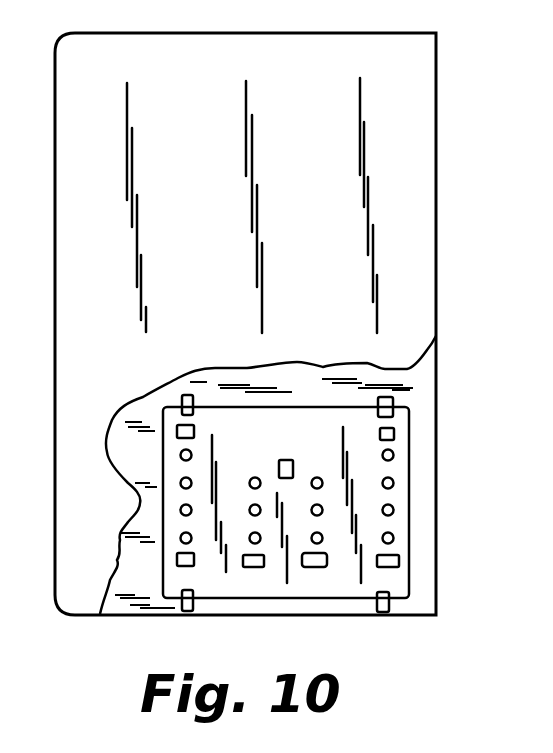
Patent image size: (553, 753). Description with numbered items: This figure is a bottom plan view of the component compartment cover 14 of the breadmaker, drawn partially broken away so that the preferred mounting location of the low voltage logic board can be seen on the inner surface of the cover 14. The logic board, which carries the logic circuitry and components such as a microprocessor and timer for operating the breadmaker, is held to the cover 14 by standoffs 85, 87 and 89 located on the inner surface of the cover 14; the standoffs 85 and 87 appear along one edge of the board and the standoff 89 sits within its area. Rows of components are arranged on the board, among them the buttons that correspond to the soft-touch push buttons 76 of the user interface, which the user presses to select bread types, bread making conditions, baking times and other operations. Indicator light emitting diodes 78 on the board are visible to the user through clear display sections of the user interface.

The cover 14 is at (436, 104).
The standoff 85 is at (393, 403).
The indicator light emitting diode 78 is at (394, 456).
The standoff 89 is at (293, 466).
The soft-touch push button 76 is at (399, 561).
The standoff 87 is at (389, 603).